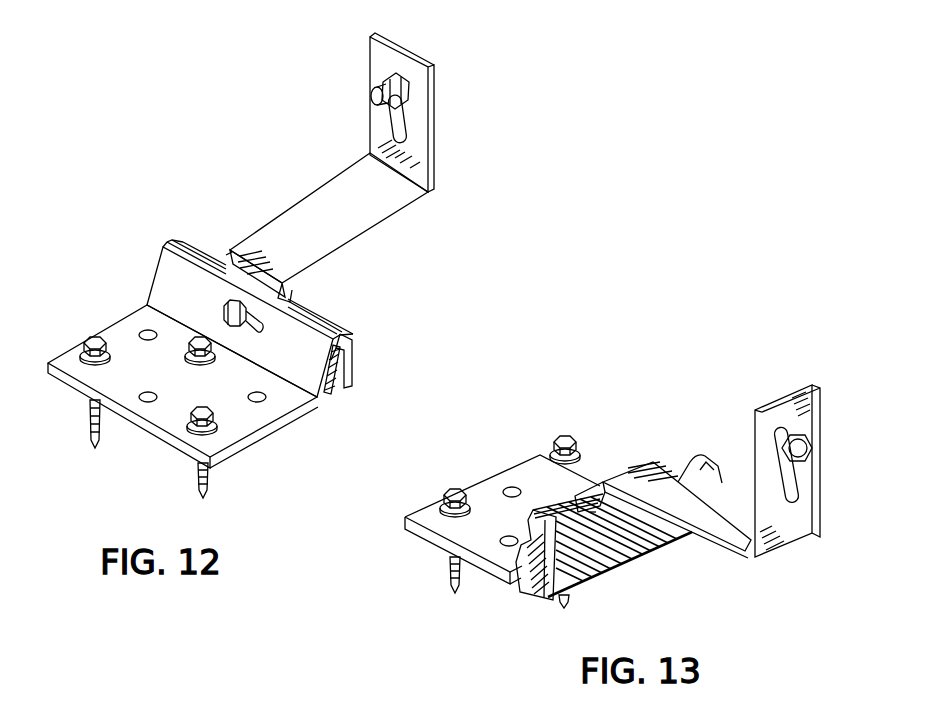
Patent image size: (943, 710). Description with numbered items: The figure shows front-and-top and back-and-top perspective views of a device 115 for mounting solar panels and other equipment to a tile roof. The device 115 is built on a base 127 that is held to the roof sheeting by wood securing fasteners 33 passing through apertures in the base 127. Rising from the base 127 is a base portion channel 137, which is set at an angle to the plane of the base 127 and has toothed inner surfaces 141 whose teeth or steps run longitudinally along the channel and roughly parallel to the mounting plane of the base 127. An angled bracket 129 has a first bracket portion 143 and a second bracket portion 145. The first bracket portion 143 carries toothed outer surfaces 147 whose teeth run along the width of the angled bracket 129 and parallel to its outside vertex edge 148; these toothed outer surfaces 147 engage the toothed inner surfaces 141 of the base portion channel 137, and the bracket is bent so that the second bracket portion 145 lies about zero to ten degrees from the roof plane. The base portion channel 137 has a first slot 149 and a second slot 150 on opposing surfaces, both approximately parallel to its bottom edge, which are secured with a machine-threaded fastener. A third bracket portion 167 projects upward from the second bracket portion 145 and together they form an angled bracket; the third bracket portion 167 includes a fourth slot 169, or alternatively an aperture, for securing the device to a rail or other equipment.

In FIG. 12, the wood securing fasteners 33 is at (90, 343).
In FIG. 13, the wood securing fasteners 33 is at (450, 497).
In FIG. 12, the device 115 is at (272, 141).
In FIG. 13, the device 115 is at (616, 394).
In FIG. 12, the base 127 is at (118, 315).
In FIG. 13, the base 127 is at (498, 469).
In FIG. 12, the angled bracket 129 is at (344, 173).
In FIG. 13, the angled bracket 129 is at (677, 486).
In FIG. 12, the base portion channel 137 is at (179, 241).
In FIG. 13, the base portion channel 137 is at (701, 440).
In FIG. 12, the toothed inner surfaces 141 is at (347, 338).
In FIG. 13, the toothed inner surfaces 141 is at (521, 584).
In FIG. 12, the first bracket portion 143 is at (228, 264).
In FIG. 13, the first bracket portion 143 is at (593, 512).
In FIG. 12, the second bracket portion 145 is at (338, 257).
In FIG. 13, the second bracket portion 145 is at (733, 549).
In FIG. 12, the toothed outer surfaces 147 is at (298, 297).
In FIG. 13, the toothed outer surfaces 147 is at (591, 493).
In FIG. 12, the outside vertex edge 148 is at (262, 280).
In FIG. 13, the outside vertex edge 148 is at (656, 463).
In FIG. 12, the first slot 149 is at (258, 326).
In FIG. 12, the second slot 150 is at (350, 360).
In FIG. 13, the second slot 150 is at (566, 572).
In FIG. 12, the third bracket portion 167 is at (431, 166).
In FIG. 13, the third bracket portion 167 is at (792, 393).
In FIG. 12, the fourth slot 169 is at (404, 126).
In FIG. 13, the fourth slot 169 is at (777, 468).